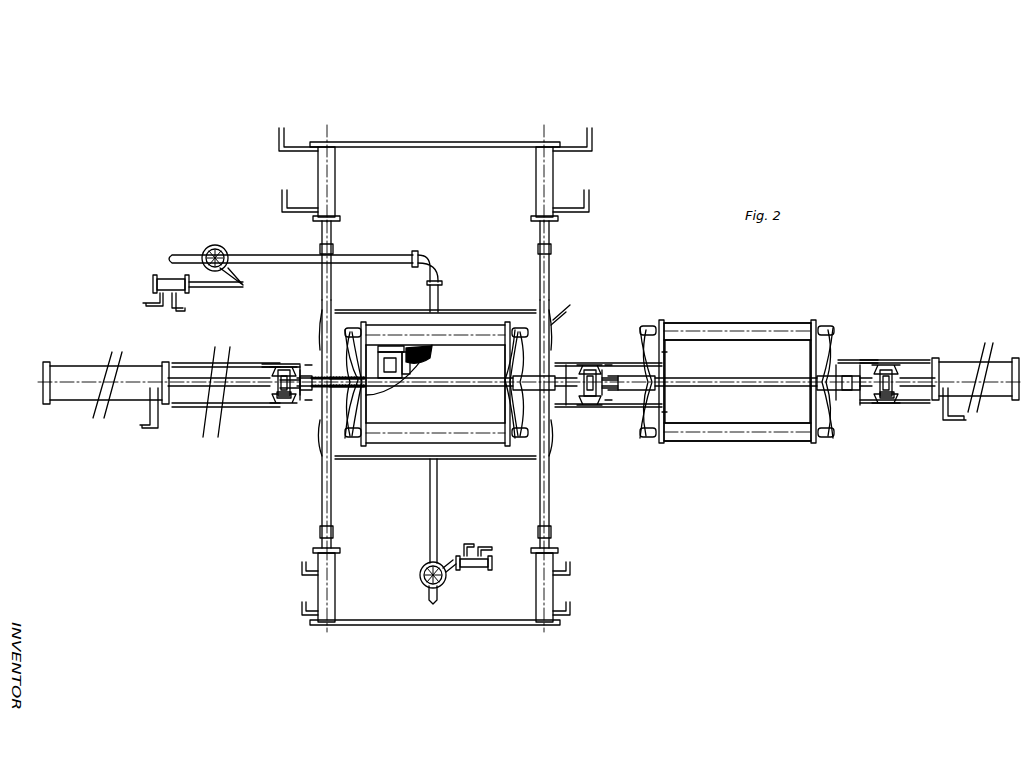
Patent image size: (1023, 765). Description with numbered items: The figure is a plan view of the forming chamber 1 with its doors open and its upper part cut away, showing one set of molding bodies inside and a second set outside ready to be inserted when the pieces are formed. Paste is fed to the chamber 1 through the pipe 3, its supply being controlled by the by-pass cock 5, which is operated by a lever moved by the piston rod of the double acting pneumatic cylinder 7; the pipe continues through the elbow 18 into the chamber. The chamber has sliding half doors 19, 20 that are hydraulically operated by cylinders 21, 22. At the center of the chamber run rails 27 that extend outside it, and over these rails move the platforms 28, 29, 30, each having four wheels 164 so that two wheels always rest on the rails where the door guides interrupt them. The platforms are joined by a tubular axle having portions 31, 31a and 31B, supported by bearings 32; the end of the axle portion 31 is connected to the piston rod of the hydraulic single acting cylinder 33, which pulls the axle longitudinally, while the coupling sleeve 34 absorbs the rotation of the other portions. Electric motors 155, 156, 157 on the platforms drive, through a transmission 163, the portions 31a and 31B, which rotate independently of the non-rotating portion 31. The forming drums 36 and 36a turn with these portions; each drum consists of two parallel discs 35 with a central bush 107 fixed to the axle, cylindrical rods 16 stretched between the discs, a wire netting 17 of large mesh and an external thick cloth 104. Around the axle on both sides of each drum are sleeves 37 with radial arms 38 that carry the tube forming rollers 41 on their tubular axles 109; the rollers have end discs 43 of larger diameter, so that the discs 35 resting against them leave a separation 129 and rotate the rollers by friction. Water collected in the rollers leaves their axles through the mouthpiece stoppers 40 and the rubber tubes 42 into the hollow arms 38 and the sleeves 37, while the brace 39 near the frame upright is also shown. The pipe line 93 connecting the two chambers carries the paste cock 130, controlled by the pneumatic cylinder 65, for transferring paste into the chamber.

The forming chamber 1 is at (335, 452).
The paste feeding pipe 3 is at (262, 256).
The by-pass cock 5 is at (217, 246).
The double acting pneumatic cylinder 7 is at (170, 282).
The cylindrical rods 16 is at (395, 346).
The wire netting of large mesh 17 is at (410, 350).
The pipe elbow 18 is at (436, 312).
The sliding half door 19 is at (322, 282).
The sliding half door 20 is at (320, 519).
The hydraulic cylinder 21 is at (318, 598).
The hydraulic cylinder 22 is at (330, 180).
The rails 27 is at (205, 407).
The sliding platform 28 is at (282, 368).
The sliding platform 29 is at (612, 370).
The sliding platform 30 is at (890, 368).
The tubular axle portion 31 is at (187, 375).
The tubular axle portion 31a is at (303, 364).
The tubular axle portion 31B is at (602, 370).
The bearings 32 is at (276, 403).
The hydraulic single acting cylinder 33 is at (72, 374).
The coupling sleeve 34 is at (258, 394).
The parallel discs 35 is at (530, 412).
The forming drum 36 is at (428, 400).
The forming drum 36a is at (737, 381).
The sleeve 37 is at (540, 378).
The radial arm 38 is at (340, 415).
The brace 39 is at (553, 330).
The mouthpiece stopper 40 is at (556, 305).
The tube forming roller 41 is at (495, 322).
The rubber tube 42 is at (352, 438).
The end disc 43 is at (508, 322).
The pneumatic cylinder 65 is at (476, 565).
The pipe line 93 is at (438, 519).
The thick cloth 104 is at (456, 318).
The central bush 107 is at (382, 352).
The tubular axle of roller 109 is at (664, 340).
The separation 129 is at (700, 340).
The paste cock 130 is at (420, 580).
The electric motor 155 is at (283, 403).
The electric motor 156 is at (588, 405).
The electric motor 157 is at (888, 400).
The transmission 163 is at (300, 375).
The wheels 164 is at (271, 368).